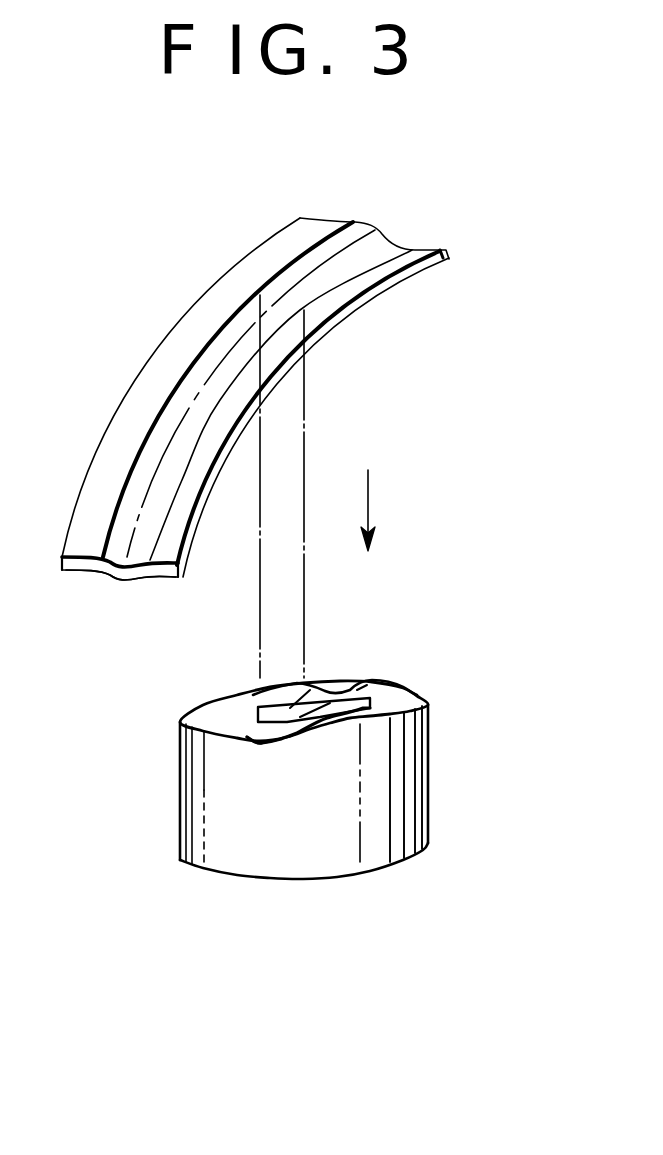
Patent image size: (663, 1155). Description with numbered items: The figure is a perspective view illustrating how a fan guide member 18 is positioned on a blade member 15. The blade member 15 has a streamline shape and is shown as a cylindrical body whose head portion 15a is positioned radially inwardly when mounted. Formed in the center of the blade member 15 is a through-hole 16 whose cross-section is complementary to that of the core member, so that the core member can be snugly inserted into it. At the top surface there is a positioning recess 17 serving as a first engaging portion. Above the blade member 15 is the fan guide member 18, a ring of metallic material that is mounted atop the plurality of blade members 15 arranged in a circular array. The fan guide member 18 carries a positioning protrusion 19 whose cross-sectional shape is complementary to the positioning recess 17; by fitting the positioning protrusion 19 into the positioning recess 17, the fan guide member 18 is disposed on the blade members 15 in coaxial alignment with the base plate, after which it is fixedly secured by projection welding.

The blade member 15 is at (302, 845).
The head portion 15a is at (413, 770).
The through-hole 16 is at (412, 690).
The positioning recess 17 is at (255, 735).
The fan guide member 18 is at (446, 250).
The positioning protrusion 19 is at (118, 580).